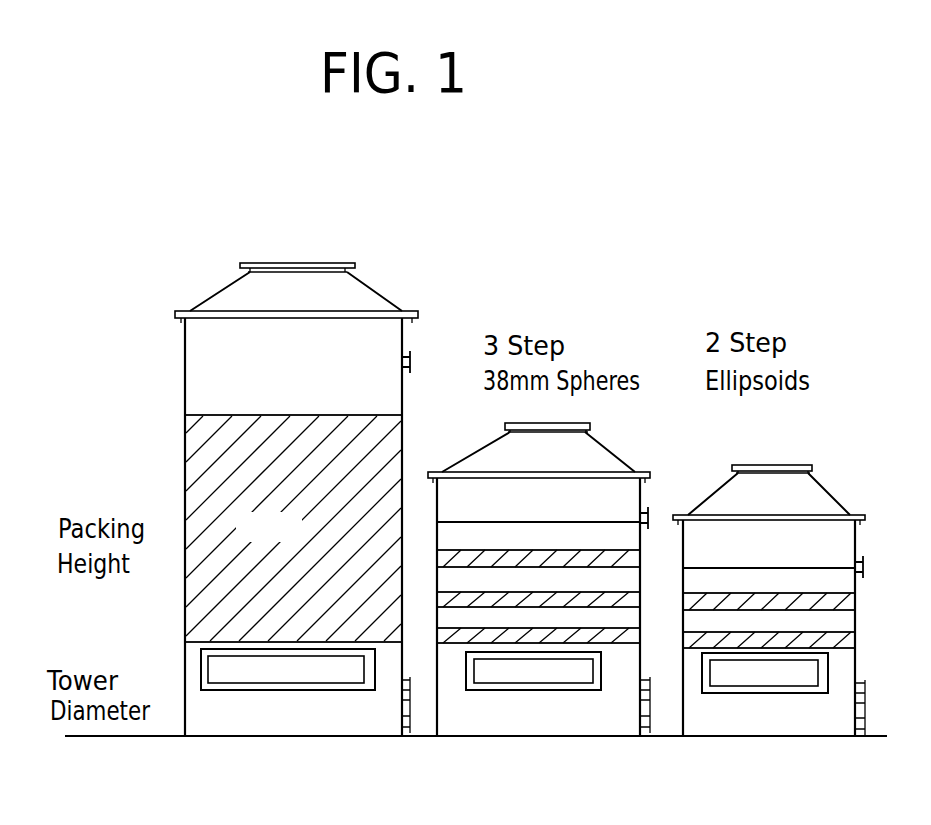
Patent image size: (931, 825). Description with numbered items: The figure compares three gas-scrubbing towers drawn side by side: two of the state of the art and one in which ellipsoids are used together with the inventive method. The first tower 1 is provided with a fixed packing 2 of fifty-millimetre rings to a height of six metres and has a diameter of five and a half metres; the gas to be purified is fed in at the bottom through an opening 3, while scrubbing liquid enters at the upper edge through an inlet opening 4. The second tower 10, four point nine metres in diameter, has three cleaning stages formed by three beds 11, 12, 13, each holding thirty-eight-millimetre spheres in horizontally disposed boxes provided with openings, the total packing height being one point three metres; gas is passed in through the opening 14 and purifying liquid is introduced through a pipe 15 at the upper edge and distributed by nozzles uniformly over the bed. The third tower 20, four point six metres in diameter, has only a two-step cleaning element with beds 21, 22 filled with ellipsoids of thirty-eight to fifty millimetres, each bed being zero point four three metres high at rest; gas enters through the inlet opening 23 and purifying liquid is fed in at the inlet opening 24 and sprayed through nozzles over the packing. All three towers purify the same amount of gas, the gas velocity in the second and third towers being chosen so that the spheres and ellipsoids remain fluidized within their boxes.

The first tower 1 is at (276, 262).
The fixed packing 2 is at (197, 450).
The opening 3 is at (330, 690).
The inlet opening 4 is at (415, 358).
The second tower 10 is at (570, 423).
The bed 11 is at (605, 565).
The bed 12 is at (607, 600).
The bed 13 is at (607, 636).
The opening 14 is at (568, 672).
The pipe 15 is at (650, 514).
The third tower 20 is at (765, 462).
The bed 21 is at (835, 605).
The bed 22 is at (830, 640).
The inlet opening 23 is at (803, 680).
The inlet opening 24 is at (860, 558).